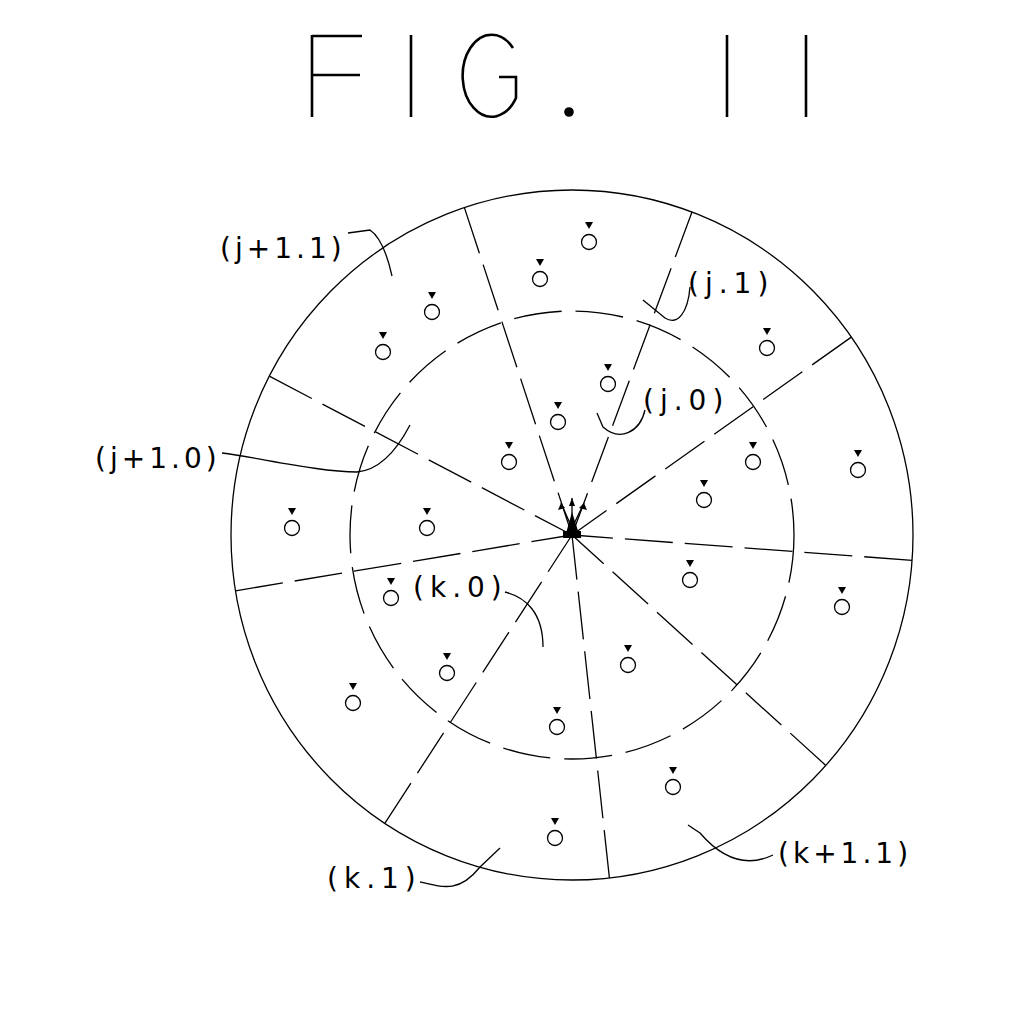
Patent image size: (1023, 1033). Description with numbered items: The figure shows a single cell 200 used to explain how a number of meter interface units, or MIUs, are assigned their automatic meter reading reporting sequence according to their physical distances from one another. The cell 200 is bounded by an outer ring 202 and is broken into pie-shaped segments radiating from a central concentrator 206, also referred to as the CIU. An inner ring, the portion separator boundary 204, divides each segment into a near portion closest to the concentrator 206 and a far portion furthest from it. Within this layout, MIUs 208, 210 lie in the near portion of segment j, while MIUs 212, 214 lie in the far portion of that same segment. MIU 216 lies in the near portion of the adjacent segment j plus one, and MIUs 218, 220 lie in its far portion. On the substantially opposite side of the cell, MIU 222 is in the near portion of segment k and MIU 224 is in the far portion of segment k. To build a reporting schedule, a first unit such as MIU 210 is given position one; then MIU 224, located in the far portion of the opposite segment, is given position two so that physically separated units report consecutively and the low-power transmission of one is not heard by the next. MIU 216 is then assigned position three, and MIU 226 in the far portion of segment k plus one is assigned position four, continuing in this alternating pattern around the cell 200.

The cell 200 is at (912, 330).
The outer ring 202 is at (332, 777).
The portion separator boundary 204 is at (386, 651).
The concentrator 206 is at (578, 531).
The MIU 208 is at (617, 374).
The MIU 210 is at (556, 418).
The MIU 212 is at (533, 280).
The MIU 214 is at (597, 242).
The MIU 216 is at (501, 462).
The MIU 218 is at (380, 358).
The MIU 220 is at (440, 315).
The MIU 222 is at (550, 733).
The MIU 224 is at (550, 832).
The MIU 226 is at (675, 780).